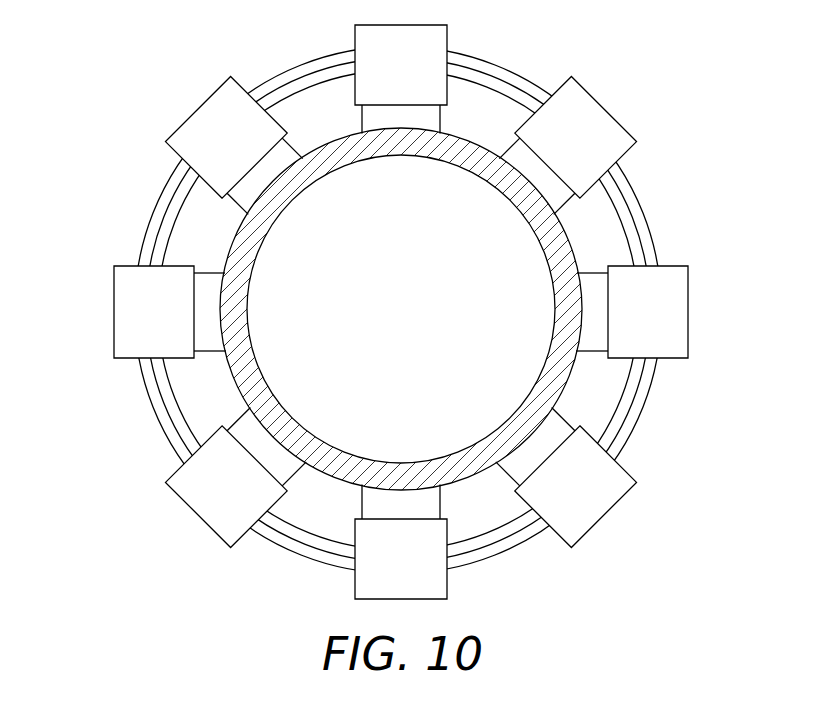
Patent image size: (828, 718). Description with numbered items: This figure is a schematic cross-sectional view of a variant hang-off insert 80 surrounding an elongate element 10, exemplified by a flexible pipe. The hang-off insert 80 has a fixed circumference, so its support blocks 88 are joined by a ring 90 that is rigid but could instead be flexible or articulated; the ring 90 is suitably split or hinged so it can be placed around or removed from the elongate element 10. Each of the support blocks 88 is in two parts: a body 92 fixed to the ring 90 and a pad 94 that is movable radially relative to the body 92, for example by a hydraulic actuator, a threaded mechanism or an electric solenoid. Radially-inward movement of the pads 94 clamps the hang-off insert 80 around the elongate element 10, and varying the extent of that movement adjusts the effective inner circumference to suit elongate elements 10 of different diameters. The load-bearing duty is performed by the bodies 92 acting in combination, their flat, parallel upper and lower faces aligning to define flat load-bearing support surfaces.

The elongate element 10 is at (263, 390).
The hang-off insert 80 is at (180, 95).
The support blocks 88 is at (495, 82).
The ring 90 is at (180, 524).
The body 92 is at (597, 111).
The pad 94 is at (283, 164).